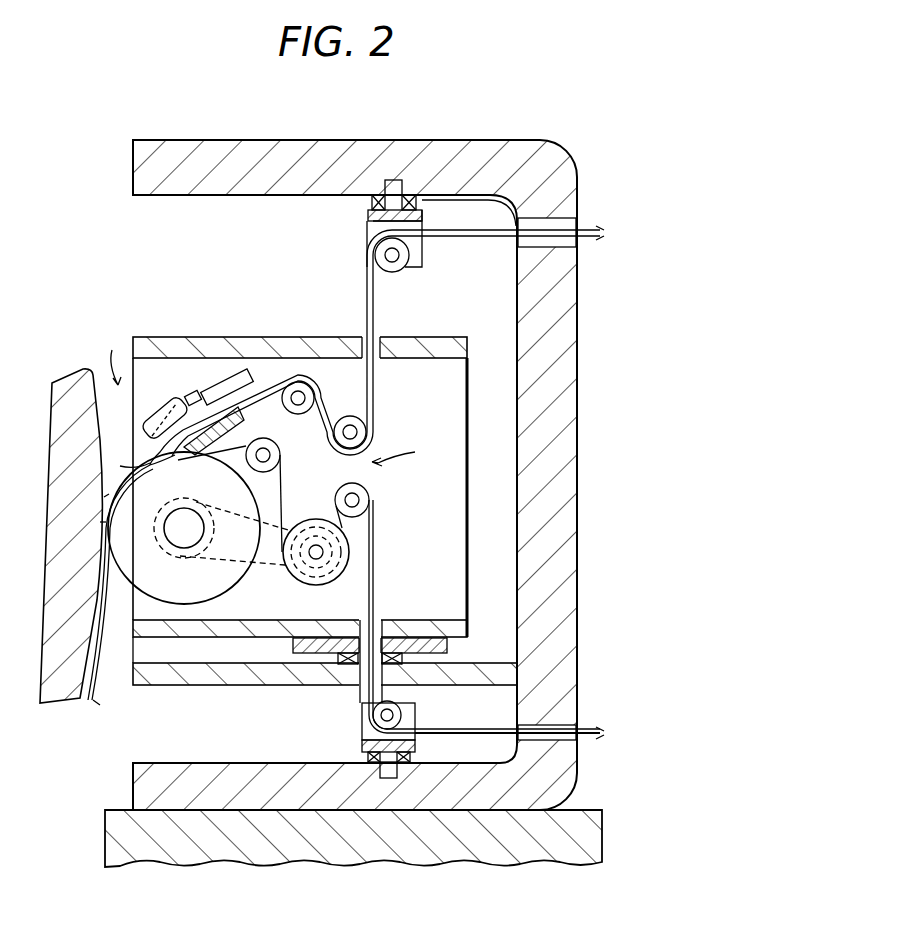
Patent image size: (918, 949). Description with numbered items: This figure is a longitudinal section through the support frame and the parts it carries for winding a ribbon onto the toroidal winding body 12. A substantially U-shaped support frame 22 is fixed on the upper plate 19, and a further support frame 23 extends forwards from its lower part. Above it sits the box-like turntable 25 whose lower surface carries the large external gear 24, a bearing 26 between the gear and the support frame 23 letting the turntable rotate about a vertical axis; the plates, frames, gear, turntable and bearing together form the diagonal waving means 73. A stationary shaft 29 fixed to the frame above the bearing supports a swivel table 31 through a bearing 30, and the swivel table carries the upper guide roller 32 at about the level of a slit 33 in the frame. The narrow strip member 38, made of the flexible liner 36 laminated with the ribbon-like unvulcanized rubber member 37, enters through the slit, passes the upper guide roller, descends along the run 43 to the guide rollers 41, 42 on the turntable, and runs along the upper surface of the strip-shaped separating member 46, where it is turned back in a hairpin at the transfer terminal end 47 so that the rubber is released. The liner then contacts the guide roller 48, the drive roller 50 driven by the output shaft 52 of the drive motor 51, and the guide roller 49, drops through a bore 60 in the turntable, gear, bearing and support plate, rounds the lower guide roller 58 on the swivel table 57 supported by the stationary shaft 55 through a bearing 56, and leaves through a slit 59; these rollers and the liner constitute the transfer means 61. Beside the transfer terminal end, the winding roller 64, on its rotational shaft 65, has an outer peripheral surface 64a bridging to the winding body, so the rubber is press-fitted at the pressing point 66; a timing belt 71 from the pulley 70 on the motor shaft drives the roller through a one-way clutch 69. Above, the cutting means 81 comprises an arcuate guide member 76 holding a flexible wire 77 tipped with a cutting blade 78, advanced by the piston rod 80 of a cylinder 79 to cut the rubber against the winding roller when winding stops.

The winding body 12 is at (85, 369).
The upper plate 19 is at (578, 810).
The support frame 22 is at (560, 555).
The support frame 23 is at (240, 686).
The external gear 24 is at (448, 645).
The turntable 25 is at (450, 337).
The bearing 26 is at (343, 666).
The stationary shaft 29 is at (400, 190).
The bearing 30 is at (368, 214).
The swivel table 31 is at (420, 255).
The upper guide roller 32 is at (402, 270).
The slit 33 is at (572, 230).
The liner 36 is at (372, 560).
The unvulcanized rubber member 37 is at (104, 497).
The narrow strip member 38 is at (455, 228).
The guide roller 41 is at (350, 416).
The guide roller 42 is at (315, 393).
The cable run 43 is at (367, 338).
The separating member 46 is at (244, 432).
The transfer terminal end 47 is at (184, 454).
The guide roller 48 is at (280, 455).
The guide roller 49 is at (368, 500).
The drive roller 50 is at (338, 577).
The drive motor 51 is at (318, 585).
The output shaft 52 is at (300, 575).
The stationary shaft 55 is at (395, 778).
The bearing 56 is at (413, 757).
The swivel table 57 is at (362, 735).
The lower guide roller 58 is at (400, 714).
The slit 59 is at (570, 732).
The bore 60 is at (383, 632).
The transfer means 61 is at (402, 451).
The winding roller 64 is at (108, 578).
The outer peripheral surface 64a is at (118, 466).
The rotational shaft 65 is at (183, 548).
The pressing point 66 is at (100, 522).
The one-way clutch 69 is at (154, 524).
The pulley 70 is at (300, 525).
The timing belt 71 is at (272, 574).
The diagonal waving means 73 is at (440, 138).
The guide member 76 is at (168, 406).
The flexible wire 77 is at (192, 394).
The cutting blade 78 is at (150, 437).
The cylinder 79 is at (246, 375).
The piston rod 80 is at (216, 408).
The cutting means 81 is at (109, 357).